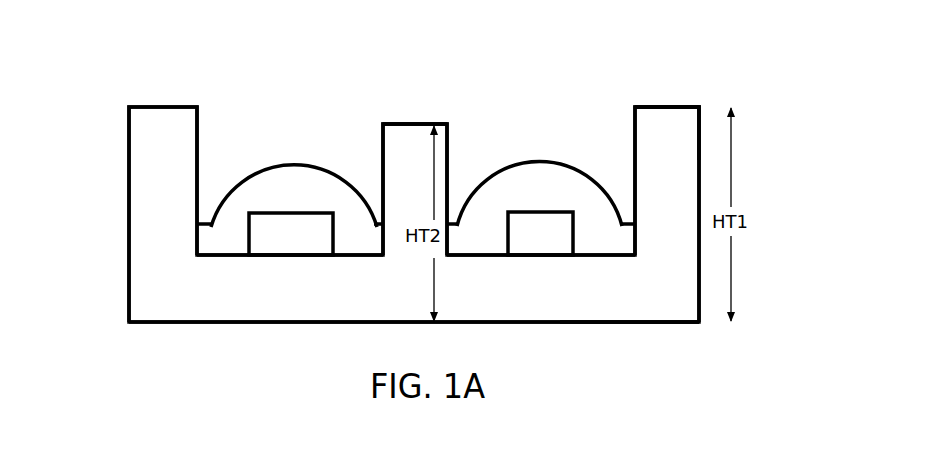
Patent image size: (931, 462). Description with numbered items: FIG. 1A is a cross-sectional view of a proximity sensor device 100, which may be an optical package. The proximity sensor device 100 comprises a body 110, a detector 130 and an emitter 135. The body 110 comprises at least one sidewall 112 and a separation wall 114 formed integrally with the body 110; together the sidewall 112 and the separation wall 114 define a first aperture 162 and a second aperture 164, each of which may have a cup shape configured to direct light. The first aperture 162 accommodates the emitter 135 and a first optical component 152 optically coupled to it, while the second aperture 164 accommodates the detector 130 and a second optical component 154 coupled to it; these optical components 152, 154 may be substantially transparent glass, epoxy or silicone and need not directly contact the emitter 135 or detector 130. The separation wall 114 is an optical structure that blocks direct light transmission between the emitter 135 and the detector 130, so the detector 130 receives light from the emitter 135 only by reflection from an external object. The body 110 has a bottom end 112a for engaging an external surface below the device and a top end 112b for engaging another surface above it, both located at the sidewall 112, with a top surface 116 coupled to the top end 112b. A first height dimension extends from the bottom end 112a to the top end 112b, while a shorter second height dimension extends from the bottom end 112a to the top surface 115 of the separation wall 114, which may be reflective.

The proximity sensor device 100 is at (217, 74).
The body 110 is at (281, 308).
The sidewall 112 is at (182, 190).
The bottom end 112a is at (603, 307).
The top end 112b is at (660, 127).
The separation wall 114 is at (427, 186).
The top surface 115 is at (388, 117).
The top surface 116 is at (689, 100).
The detector 130 is at (561, 246).
The emitter 135 is at (311, 246).
The first optical component 152 is at (311, 202).
The second optical component 154 is at (559, 202).
The first aperture 162 is at (303, 146).
The second aperture 164 is at (602, 150).